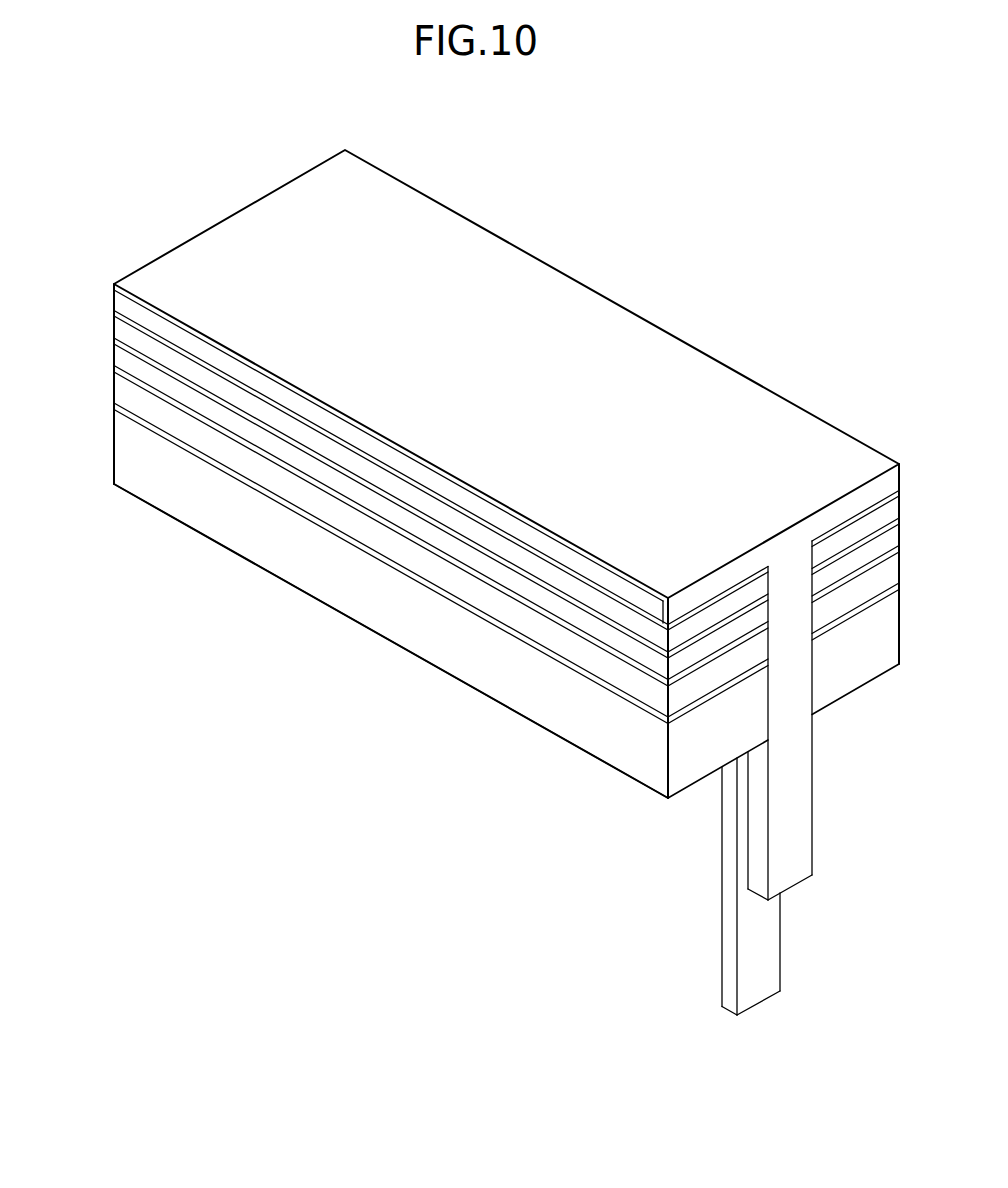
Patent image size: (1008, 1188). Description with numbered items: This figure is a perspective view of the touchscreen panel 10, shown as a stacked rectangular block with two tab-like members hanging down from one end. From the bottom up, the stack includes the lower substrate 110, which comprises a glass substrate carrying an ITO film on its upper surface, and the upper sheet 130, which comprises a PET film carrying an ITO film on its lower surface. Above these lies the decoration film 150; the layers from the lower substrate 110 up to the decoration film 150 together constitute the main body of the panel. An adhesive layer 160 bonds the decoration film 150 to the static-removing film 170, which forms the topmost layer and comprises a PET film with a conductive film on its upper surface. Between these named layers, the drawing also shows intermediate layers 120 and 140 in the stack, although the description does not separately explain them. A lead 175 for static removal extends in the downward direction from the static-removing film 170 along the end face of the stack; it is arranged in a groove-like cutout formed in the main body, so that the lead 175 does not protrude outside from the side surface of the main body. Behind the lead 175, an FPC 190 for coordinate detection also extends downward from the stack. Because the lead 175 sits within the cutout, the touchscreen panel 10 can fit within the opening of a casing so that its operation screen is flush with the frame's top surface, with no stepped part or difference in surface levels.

The touchscreen panel 10 is at (803, 209).
The lower substrate 110 is at (123, 448).
The layer 120 is at (118, 393).
The upper sheet 130 is at (118, 365).
The layer 140 is at (118, 343).
The decoration film 150 is at (118, 332).
The adhesive layer 160 is at (118, 322).
The static-removing film 170 is at (643, 378).
The lead 175 is at (798, 805).
The FPC 190 is at (768, 938).